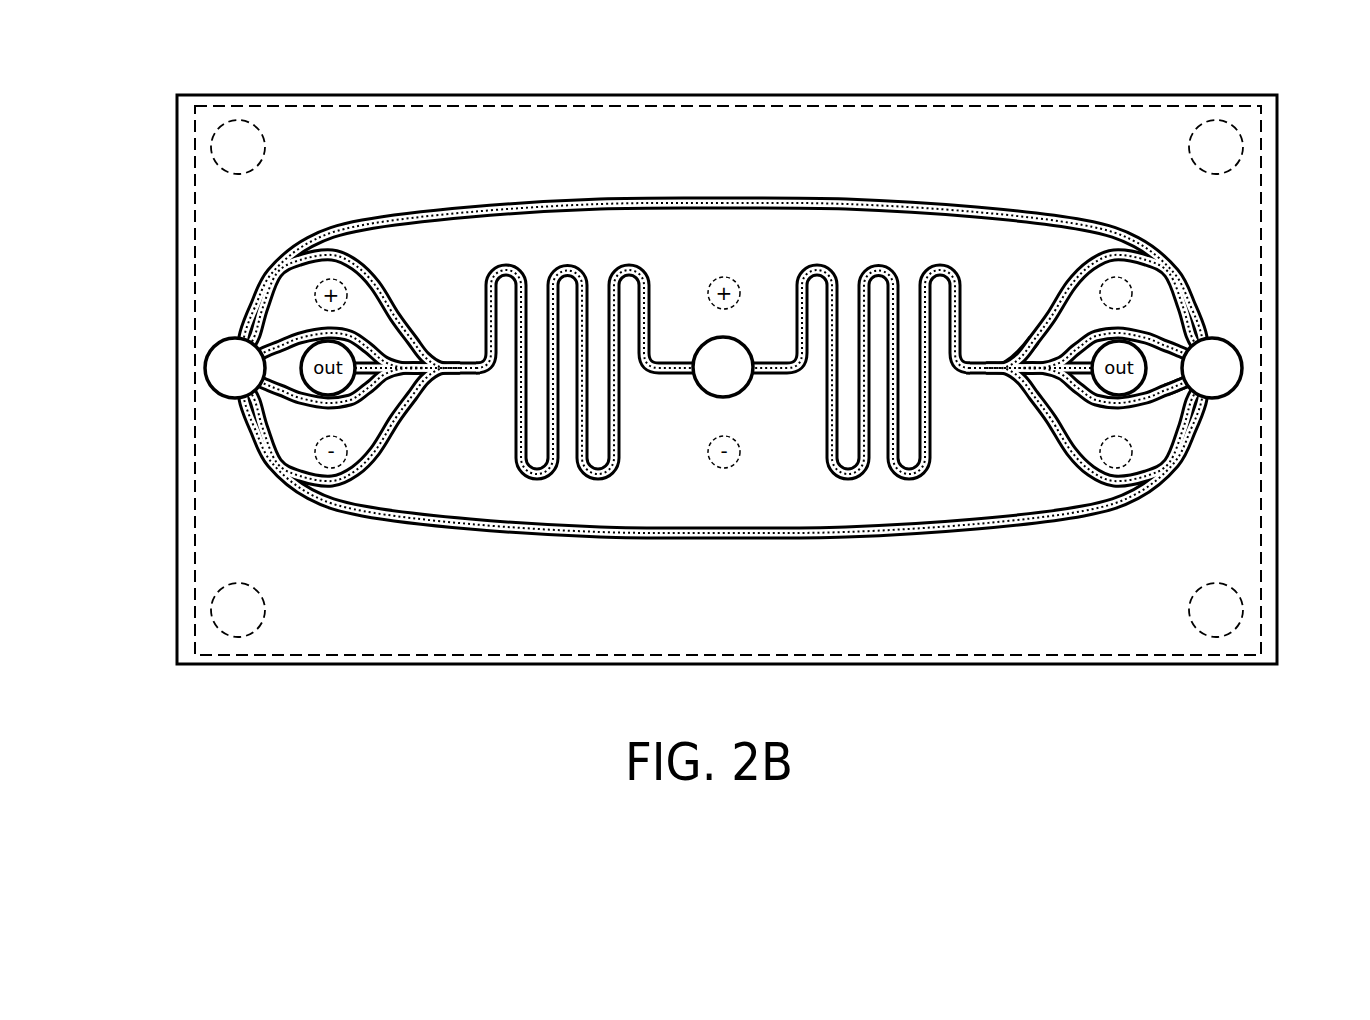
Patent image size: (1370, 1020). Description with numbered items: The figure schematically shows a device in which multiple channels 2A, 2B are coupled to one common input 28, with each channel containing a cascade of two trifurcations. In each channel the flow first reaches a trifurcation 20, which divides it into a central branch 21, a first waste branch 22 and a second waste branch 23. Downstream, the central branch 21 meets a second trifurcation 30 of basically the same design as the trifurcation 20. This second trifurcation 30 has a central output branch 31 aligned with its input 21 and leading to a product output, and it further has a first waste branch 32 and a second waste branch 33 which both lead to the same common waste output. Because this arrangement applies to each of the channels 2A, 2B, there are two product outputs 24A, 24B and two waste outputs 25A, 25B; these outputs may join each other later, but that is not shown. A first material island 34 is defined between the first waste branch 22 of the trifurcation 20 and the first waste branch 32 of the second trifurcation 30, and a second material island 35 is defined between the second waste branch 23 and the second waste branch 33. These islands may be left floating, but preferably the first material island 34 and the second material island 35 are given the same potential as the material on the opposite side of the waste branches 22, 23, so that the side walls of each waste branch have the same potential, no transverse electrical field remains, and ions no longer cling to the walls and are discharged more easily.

The channel 2A is at (568, 490).
The channel 2B is at (880, 490).
The trifurcation 20 is at (1010, 385).
The central branch 21 is at (1043, 348).
The first waste branch 22 is at (1072, 290).
The second waste branch 23 is at (1140, 478).
The product output 24A is at (310, 338).
The product output 24B is at (1150, 340).
The waste output 25A is at (206, 362).
The waste output 25B is at (1241, 362).
The common input 28 is at (706, 345).
The second trifurcation 30 is at (1053, 385).
The central output branch 31 is at (1085, 390).
The first waste branch 32 is at (1140, 338).
The second waste branch 33 is at (1158, 392).
The first material island 34 is at (1118, 283).
The second material island 35 is at (1128, 442).